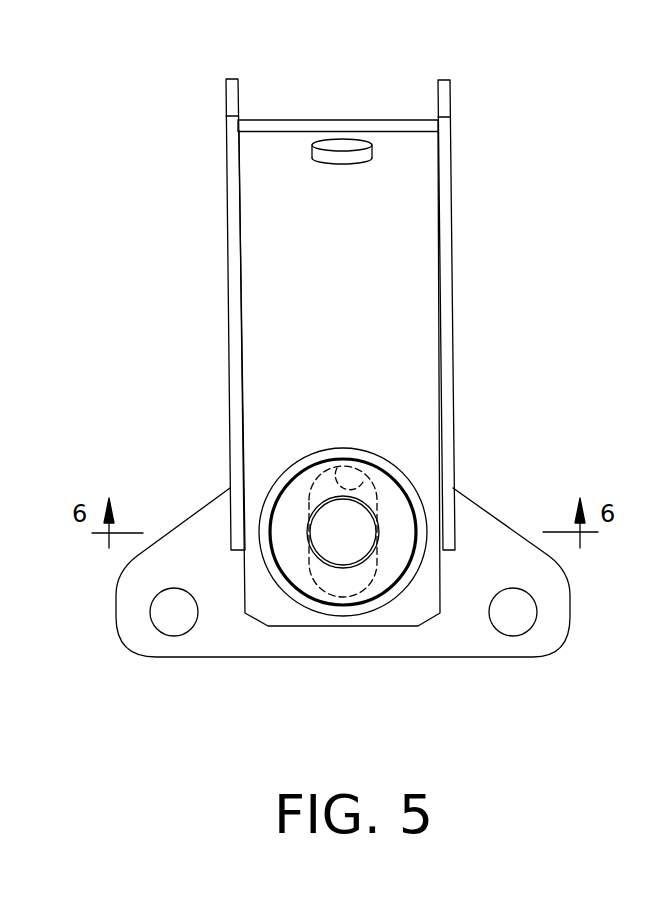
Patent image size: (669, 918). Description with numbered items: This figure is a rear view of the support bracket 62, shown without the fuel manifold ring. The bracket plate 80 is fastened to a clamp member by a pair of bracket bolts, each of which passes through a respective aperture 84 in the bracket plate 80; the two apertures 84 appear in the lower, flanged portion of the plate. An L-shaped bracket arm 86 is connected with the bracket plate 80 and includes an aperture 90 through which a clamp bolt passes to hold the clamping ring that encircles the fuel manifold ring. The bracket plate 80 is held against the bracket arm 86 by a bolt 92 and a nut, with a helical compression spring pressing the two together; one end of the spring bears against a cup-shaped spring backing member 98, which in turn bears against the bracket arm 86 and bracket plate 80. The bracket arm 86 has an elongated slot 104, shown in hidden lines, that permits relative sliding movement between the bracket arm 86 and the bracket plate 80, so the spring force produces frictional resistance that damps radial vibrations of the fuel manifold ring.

The support bracket 62 is at (520, 95).
The bracket plate 80 is at (472, 517).
The aperture 84 is at (193, 628).
The bracket arm 86 is at (443, 167).
The aperture 90 is at (348, 147).
The bolt 92 is at (338, 548).
The spring backing member 98 is at (277, 480).
The elongated slot 104 is at (363, 480).